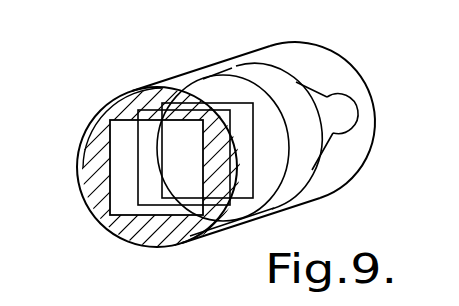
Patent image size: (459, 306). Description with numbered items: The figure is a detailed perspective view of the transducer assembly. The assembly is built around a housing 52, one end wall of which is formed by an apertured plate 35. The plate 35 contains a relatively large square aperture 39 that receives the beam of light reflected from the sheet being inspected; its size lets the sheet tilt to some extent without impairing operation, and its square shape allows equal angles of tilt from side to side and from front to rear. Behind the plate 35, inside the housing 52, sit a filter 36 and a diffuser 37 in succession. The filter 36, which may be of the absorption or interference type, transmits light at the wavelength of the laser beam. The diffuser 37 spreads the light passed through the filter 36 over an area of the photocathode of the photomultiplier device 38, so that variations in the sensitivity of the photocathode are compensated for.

The apertured plate 35 is at (140, 247).
The filter 36 is at (139, 110).
The diffuser 37 is at (240, 105).
The photomultiplier device 38 is at (290, 84).
The square aperture 39 is at (116, 192).
The housing 52 is at (190, 72).